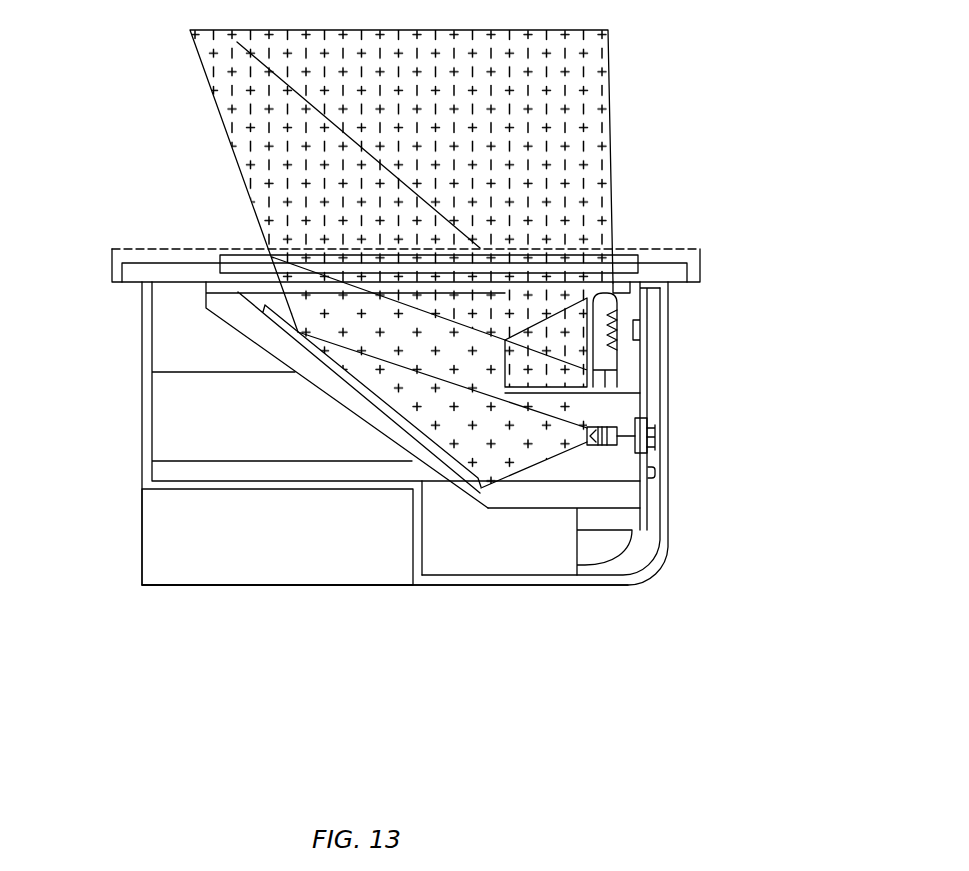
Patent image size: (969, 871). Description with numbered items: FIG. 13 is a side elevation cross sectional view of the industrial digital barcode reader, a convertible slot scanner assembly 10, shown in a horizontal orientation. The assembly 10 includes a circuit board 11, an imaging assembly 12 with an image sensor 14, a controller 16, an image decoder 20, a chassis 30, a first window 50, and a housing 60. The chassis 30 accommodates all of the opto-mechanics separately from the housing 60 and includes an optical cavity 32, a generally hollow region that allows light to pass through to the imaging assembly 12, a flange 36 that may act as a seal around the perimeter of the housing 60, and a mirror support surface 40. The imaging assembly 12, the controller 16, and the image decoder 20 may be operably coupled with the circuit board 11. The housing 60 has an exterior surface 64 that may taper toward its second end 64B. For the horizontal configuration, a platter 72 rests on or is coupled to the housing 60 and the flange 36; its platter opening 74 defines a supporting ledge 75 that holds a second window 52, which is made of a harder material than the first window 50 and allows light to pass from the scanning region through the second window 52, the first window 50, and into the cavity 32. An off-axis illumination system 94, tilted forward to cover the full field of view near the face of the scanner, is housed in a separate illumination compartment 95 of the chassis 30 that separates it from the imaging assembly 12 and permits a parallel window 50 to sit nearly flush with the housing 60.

The convertible slot scanner assembly 10 is at (98, 556).
The circuit board 11 is at (643, 515).
The imaging assembly 12 is at (647, 455).
The image sensor 14 is at (635, 418).
The controller 16 is at (643, 393).
The image decoder 20 is at (645, 368).
The chassis 30 is at (250, 328).
The optical cavity 32 is at (413, 322).
The flange 36 is at (167, 284).
The mirror support surface 40 is at (407, 427).
The first window 50 is at (613, 290).
The second window 52 is at (563, 285).
The housing 60 is at (165, 518).
The exterior surface 64 is at (590, 577).
The second end 64B is at (297, 605).
The platter 72 is at (150, 249).
The platter opening 74 is at (642, 255).
The supporting ledge 75 is at (657, 280).
The illumination system 94 is at (605, 316).
The illumination compartment 95 is at (477, 480).